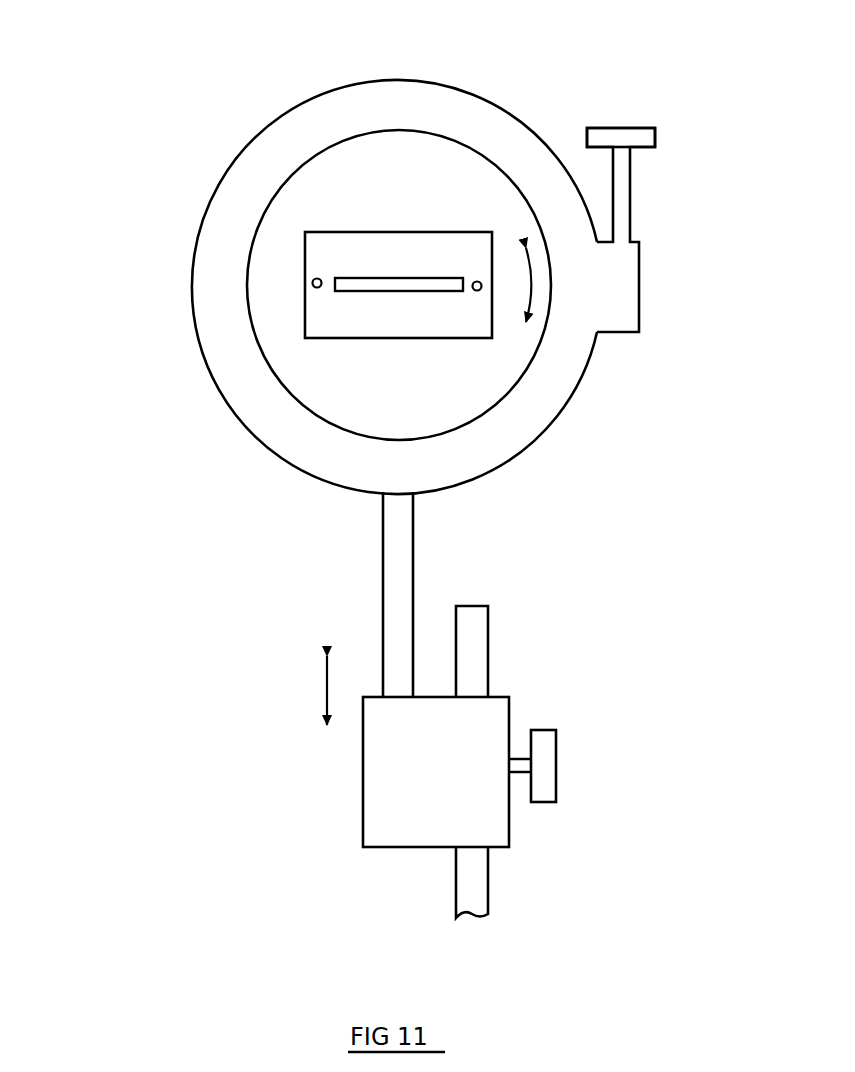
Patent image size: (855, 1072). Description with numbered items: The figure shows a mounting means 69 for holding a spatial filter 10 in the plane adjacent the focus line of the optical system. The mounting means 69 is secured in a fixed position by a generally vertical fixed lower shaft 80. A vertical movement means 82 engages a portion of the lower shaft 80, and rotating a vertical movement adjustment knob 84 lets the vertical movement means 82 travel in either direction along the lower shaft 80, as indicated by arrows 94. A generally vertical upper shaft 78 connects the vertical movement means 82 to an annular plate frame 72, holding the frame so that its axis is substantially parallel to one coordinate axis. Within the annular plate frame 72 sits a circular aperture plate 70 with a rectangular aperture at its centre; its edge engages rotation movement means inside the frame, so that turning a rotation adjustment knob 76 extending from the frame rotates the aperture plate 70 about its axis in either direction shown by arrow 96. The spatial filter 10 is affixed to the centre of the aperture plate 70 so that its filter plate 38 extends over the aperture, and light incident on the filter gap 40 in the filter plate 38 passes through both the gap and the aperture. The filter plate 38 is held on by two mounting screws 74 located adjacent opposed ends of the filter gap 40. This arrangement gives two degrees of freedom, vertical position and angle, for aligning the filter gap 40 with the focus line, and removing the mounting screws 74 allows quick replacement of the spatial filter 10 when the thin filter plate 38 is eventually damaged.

The mounting means 69 is at (142, 148).
The spatial filter 10 is at (392, 251).
The filter plate 38 is at (320, 247).
The filter gap 40 is at (378, 282).
The aperture plate 70 is at (268, 285).
The annular plate frame 72 is at (217, 337).
The mounting screws 74 is at (316, 289).
The rotation adjustment knob 76 is at (645, 135).
The upper shaft 78 is at (390, 552).
The lower shaft 80 is at (477, 632).
The vertical movement means 82 is at (373, 782).
The vertical movement adjustment knob 84 is at (545, 768).
The arrows 94 is at (327, 692).
The arrow 96 is at (543, 290).